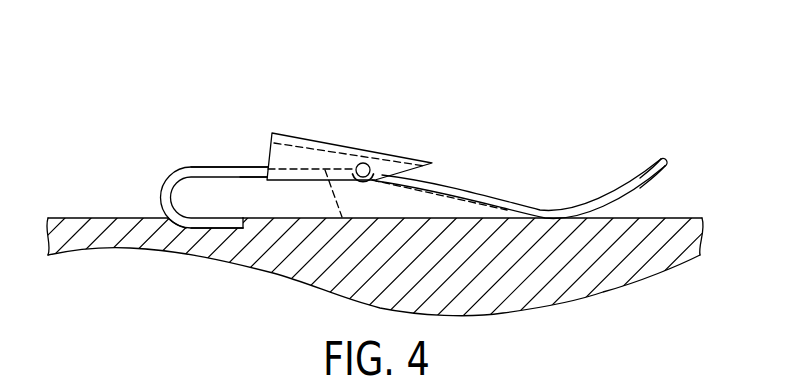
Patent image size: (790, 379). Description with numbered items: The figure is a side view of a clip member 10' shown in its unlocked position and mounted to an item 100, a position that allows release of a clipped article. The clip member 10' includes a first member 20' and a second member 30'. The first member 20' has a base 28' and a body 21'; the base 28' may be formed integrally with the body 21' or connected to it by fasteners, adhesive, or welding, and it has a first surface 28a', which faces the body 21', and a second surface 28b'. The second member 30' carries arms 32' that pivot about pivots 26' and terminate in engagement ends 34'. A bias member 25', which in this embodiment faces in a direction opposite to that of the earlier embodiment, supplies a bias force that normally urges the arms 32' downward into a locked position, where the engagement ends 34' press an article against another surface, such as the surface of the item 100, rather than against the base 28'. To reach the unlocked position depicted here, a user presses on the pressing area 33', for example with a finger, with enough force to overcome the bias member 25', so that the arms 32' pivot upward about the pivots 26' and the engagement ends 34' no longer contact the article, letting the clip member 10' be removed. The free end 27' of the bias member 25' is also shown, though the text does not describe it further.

The clip member 10' is at (388, 146).
The first member 20' is at (189, 167).
The body 21' is at (229, 137).
The engagement ends 34' is at (239, 196).
The base 28' is at (217, 265).
The first surface 28a' is at (171, 260).
The second surface 28b' is at (258, 264).
The second member 30' is at (467, 147).
The pressing area 33' is at (349, 138).
The arms 32' is at (343, 225).
The pivots 26' is at (381, 221).
The bias member 25' is at (519, 164).
The free end of spring arm 27' is at (646, 149).
The item 100 is at (359, 242).